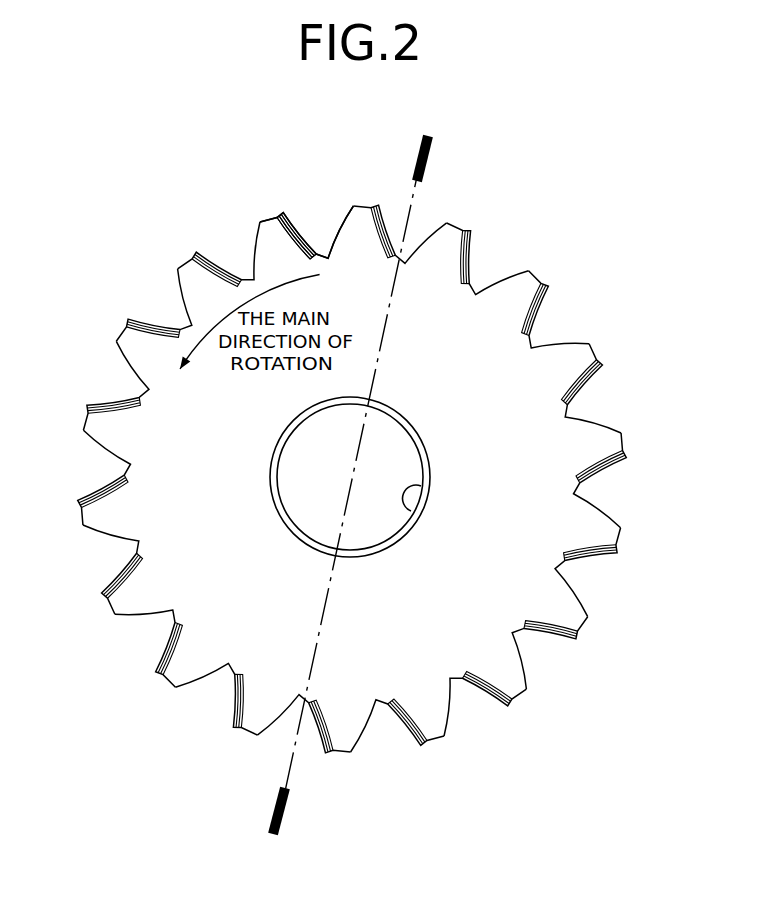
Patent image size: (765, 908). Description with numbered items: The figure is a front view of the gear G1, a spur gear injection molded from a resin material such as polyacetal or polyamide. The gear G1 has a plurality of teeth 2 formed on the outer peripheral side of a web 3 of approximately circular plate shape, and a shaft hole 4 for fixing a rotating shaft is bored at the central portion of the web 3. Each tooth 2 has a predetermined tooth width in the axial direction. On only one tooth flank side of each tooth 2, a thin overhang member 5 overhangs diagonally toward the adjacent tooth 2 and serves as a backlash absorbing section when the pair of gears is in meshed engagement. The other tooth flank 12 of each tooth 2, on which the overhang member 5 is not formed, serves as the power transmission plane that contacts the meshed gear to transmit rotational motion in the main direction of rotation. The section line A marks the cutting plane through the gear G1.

The gear G1 is at (590, 280).
The tooth 2 is at (278, 262).
The web 3 is at (530, 440).
The shaft hole 4 is at (423, 494).
The overhang member 5 is at (300, 235).
The other tooth flank 12 is at (242, 245).
The section line A- A is at (438, 157).